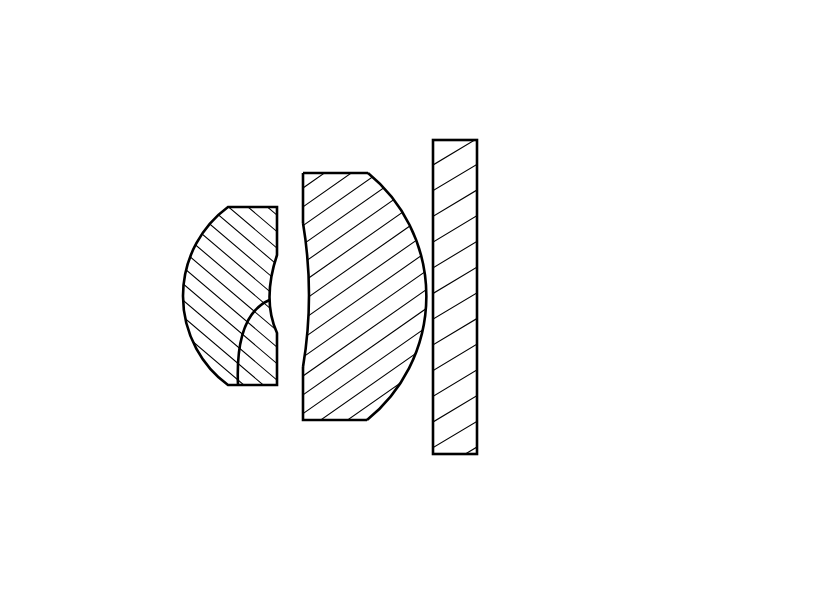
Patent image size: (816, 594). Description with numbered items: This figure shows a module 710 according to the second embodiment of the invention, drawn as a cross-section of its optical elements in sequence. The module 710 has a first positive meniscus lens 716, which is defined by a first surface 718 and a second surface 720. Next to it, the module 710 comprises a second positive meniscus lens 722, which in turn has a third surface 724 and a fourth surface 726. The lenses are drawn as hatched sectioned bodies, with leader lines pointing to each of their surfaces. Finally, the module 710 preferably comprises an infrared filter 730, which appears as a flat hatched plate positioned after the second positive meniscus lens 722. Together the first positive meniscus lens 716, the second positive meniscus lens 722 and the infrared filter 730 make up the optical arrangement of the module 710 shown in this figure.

The module 710 is at (164, 101).
The first positive meniscus lens 716 is at (242, 213).
The first surface 718 is at (213, 222).
The second surface 720 is at (238, 385).
The second positive meniscus lens 722 is at (340, 412).
The third surface 724 is at (308, 283).
The fourth surface 726 is at (383, 410).
The infrared filter 730 is at (463, 143).